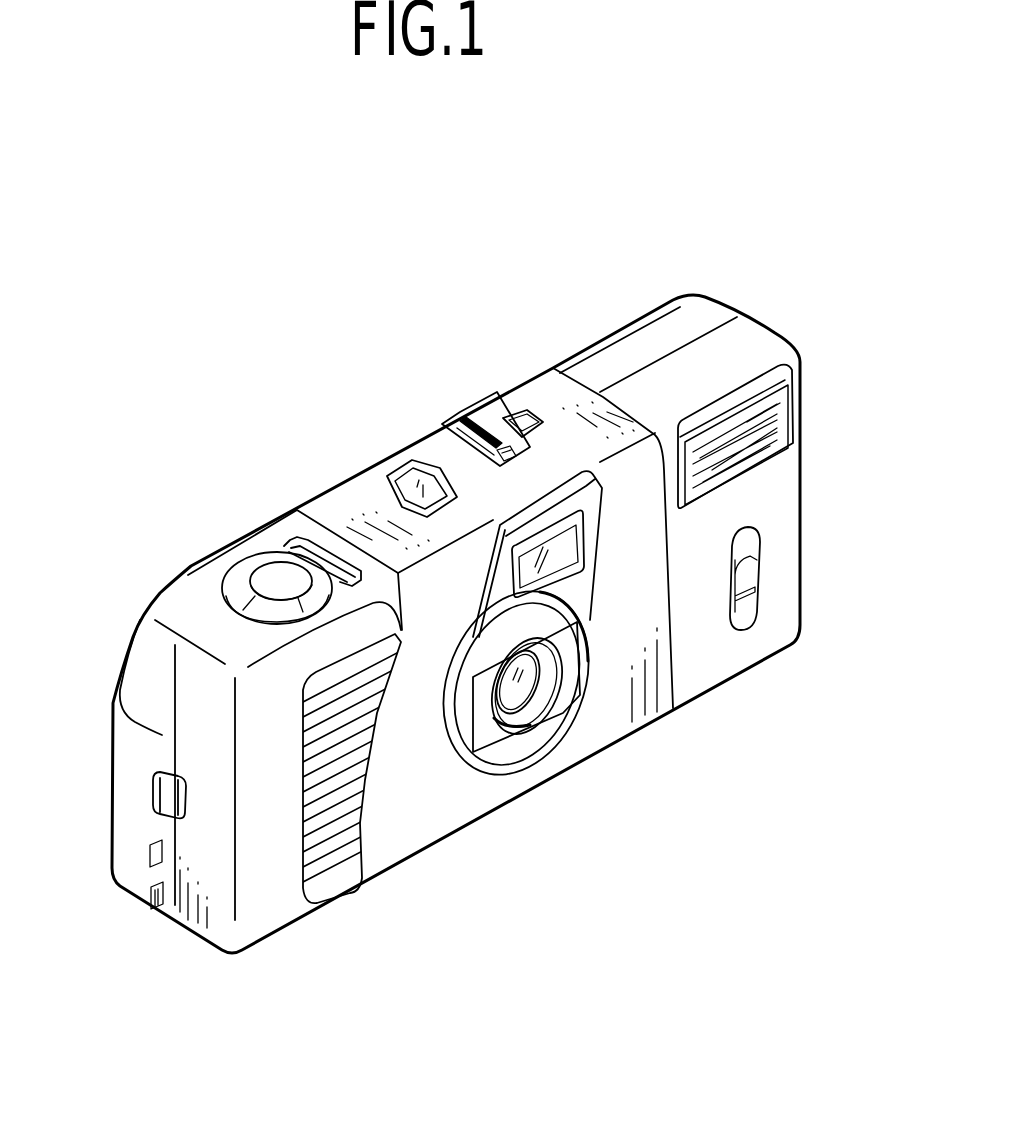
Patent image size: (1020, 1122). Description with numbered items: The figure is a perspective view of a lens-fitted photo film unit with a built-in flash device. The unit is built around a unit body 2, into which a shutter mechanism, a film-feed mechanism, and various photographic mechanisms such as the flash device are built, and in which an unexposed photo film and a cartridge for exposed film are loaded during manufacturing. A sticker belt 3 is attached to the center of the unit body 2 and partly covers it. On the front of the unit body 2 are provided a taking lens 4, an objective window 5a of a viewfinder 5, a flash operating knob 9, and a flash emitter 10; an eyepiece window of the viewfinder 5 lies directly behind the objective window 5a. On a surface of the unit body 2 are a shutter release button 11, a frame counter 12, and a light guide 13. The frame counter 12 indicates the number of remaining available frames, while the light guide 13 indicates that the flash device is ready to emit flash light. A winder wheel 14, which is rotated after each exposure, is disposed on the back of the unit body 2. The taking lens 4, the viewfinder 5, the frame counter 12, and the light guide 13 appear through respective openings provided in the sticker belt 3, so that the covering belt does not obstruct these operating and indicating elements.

The unit body 2 is at (656, 307).
The sticker belt 3 is at (333, 500).
The taking lens 4 is at (500, 700).
The viewfinder 5 is at (418, 660).
The objective window 5a is at (512, 565).
The flash operating knob 9 is at (755, 607).
The flash emitter 10 is at (778, 415).
The shutter release button 11 is at (267, 582).
The frame counter 12 is at (403, 478).
The light guide 13 is at (512, 417).
The winder wheel 14 is at (130, 623).